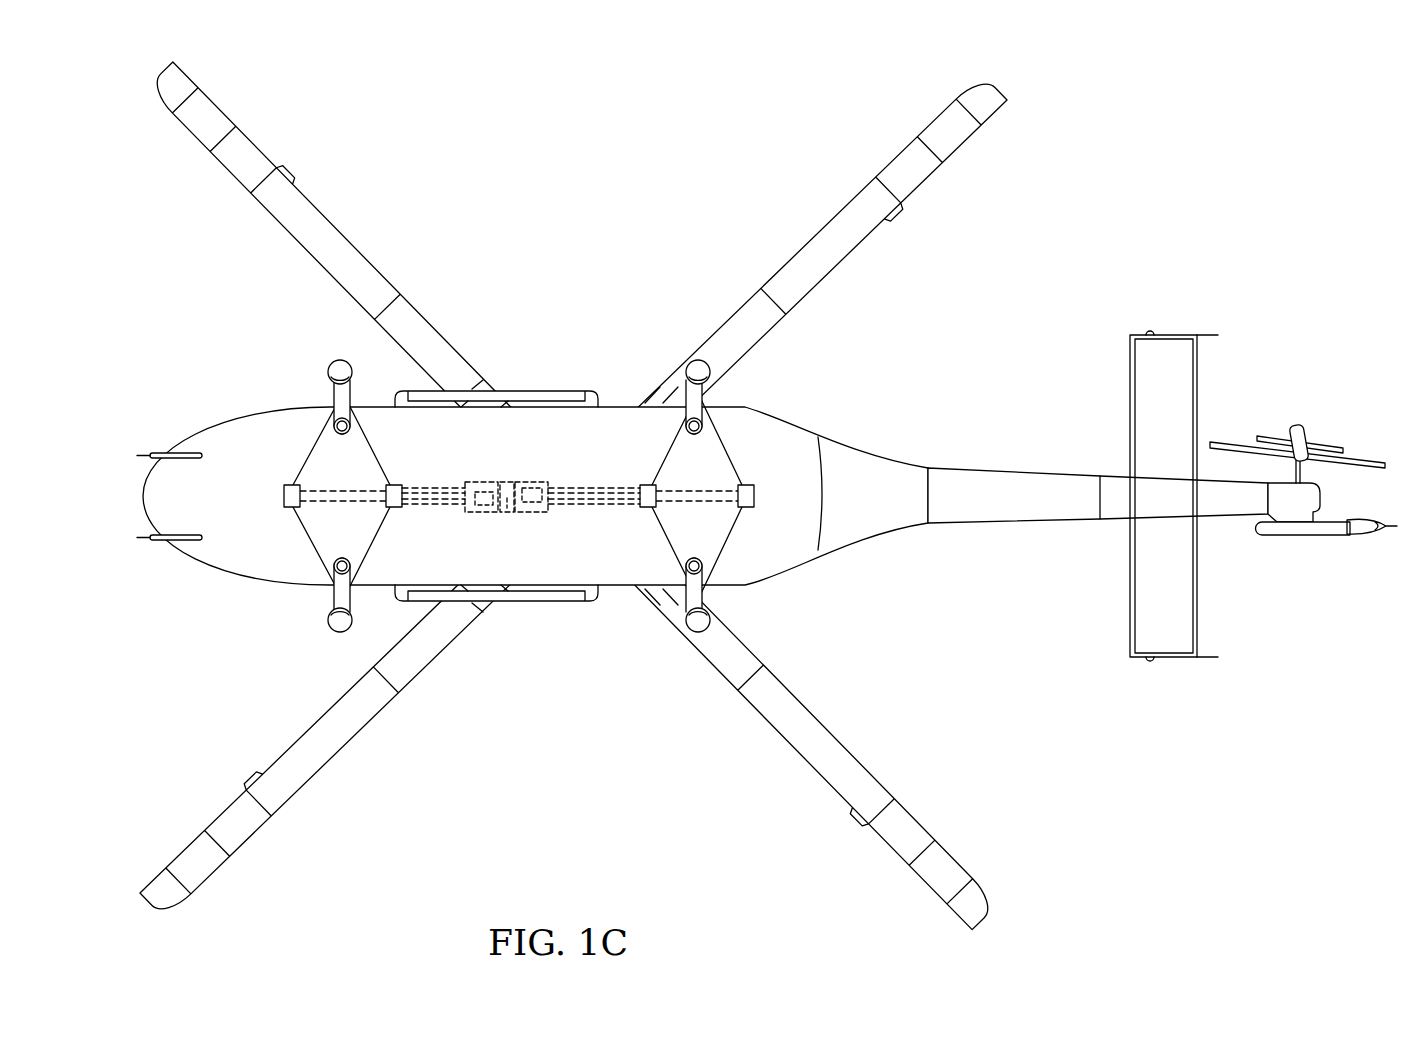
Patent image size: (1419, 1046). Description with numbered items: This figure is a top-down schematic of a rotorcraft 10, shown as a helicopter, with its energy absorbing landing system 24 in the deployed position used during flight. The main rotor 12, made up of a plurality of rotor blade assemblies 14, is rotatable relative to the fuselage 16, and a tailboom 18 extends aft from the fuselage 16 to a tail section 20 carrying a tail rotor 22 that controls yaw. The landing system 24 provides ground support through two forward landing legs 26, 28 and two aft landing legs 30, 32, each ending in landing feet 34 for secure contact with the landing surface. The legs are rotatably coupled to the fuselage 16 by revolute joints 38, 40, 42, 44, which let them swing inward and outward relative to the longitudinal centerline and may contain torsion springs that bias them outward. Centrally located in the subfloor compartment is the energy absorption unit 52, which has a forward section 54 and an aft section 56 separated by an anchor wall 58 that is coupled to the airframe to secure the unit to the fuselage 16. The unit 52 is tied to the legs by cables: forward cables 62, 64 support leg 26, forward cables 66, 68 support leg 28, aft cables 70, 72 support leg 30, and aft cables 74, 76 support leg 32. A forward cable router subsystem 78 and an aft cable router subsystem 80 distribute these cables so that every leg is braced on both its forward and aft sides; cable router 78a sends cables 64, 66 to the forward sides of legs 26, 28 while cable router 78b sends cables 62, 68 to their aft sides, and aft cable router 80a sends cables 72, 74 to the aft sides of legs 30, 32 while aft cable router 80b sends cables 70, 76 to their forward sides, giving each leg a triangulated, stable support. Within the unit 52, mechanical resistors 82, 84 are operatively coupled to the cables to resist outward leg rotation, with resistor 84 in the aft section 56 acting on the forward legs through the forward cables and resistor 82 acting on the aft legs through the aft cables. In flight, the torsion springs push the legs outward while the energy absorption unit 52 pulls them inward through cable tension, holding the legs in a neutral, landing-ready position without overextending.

The rotorcraft 10 is at (766, 488).
The main rotor 12 is at (1003, 87).
The rotor blade assemblies 14 is at (621, 496).
The fuselage 16 is at (222, 426).
The tailboom 18 is at (1015, 467).
The tail section 20 is at (1296, 537).
The tail rotor 22 is at (1302, 425).
The energy absorbing landing system 24 is at (521, 453).
The forward landing leg 26 is at (327, 373).
The forward landing leg 28 is at (327, 621).
The aft landing leg 30 is at (689, 358).
The aft landing leg 32 is at (690, 636).
The landing feet 34 is at (308, 368).
The revolute joint 38 is at (333, 452).
The revolute joint 40 is at (333, 540).
The revolute joint 42 is at (704, 453).
The revolute joint 44 is at (704, 540).
The energy absorption unit 52 is at (470, 496).
The forward section 54 is at (481, 497).
The aft section 56 is at (544, 495).
The anchor wall 58 is at (505, 512).
The forward cable 62 is at (372, 412).
The forward cable 64 is at (305, 451).
The forward cable 66 is at (305, 540).
The forward cable 68 is at (383, 540).
The aft cable 70 is at (650, 430).
The aft cable 72 is at (738, 456).
The aft cable 74 is at (722, 572).
The aft cable 76 is at (658, 540).
The forward cable router subsystem 78 is at (320, 478).
The cable router 78a is at (283, 503).
The cable router 78b is at (402, 483).
The aft cable router subsystem 80 is at (743, 496).
The aft cable router 80a is at (761, 489).
The aft cable router 80b is at (641, 484).
The mechanical resistor 82 is at (484, 512).
The mechanical resistor 84 is at (544, 512).